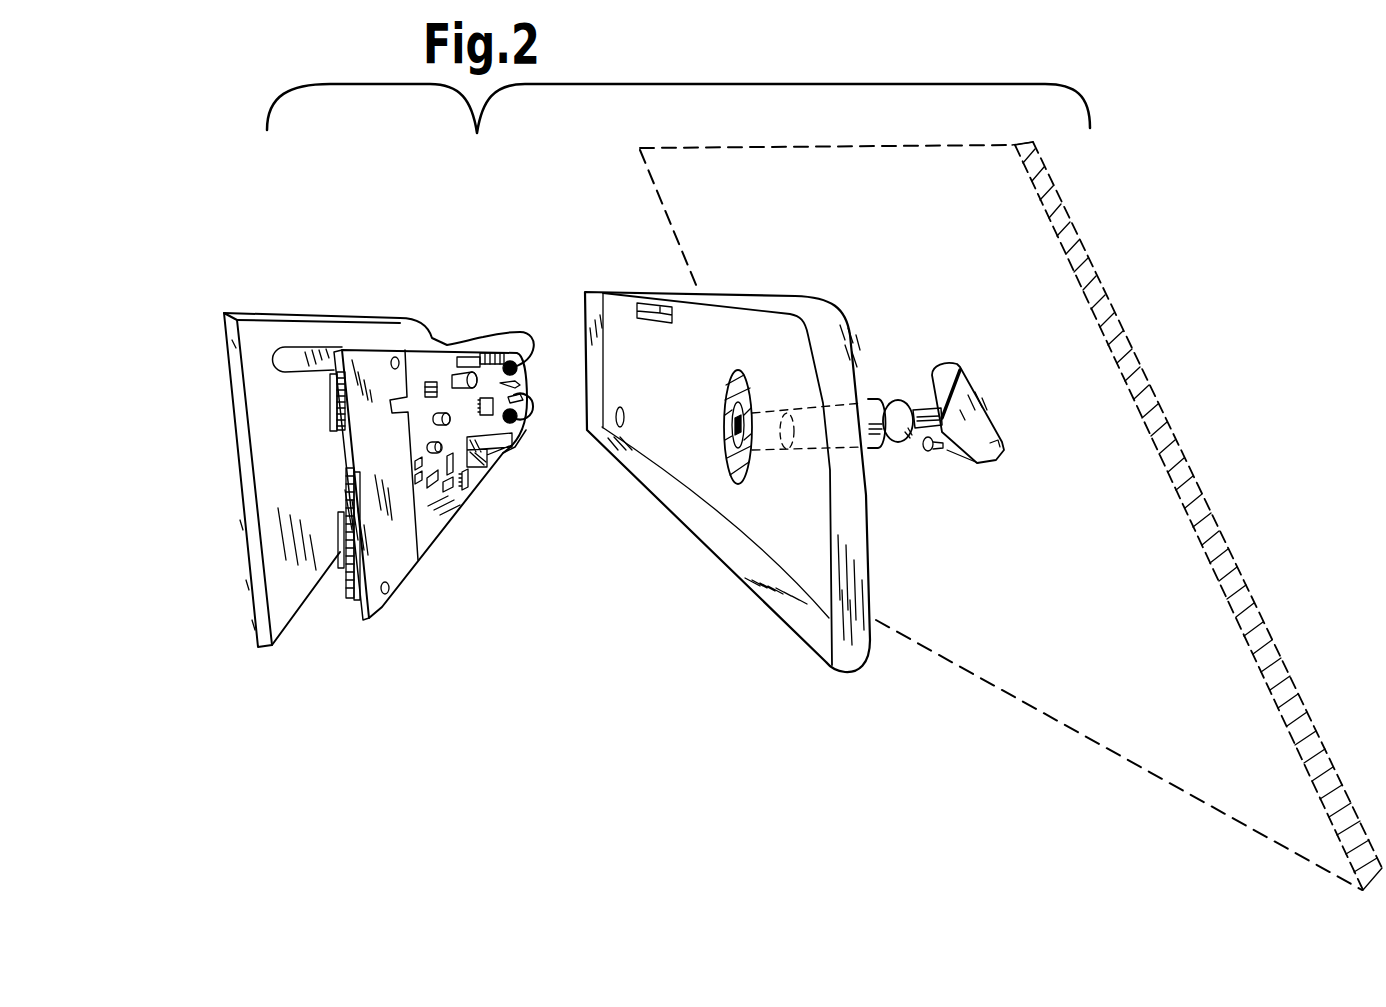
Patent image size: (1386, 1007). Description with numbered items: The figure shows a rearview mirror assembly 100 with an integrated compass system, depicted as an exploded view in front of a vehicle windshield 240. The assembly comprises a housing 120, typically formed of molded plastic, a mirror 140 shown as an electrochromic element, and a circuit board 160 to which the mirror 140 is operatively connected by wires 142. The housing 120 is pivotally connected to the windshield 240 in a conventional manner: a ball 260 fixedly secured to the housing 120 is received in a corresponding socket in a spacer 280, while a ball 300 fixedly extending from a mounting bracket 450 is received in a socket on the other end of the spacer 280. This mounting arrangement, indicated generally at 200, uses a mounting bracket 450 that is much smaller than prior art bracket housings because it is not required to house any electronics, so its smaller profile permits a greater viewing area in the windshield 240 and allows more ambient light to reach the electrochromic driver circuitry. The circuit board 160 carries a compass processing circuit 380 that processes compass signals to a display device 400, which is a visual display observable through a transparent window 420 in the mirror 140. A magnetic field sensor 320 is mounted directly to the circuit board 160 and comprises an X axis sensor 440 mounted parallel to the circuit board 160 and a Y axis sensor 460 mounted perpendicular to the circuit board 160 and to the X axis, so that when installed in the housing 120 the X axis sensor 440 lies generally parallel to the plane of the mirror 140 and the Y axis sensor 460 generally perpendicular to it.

The rearview mirror assembly 100 is at (758, 509).
The housing 120 is at (872, 665).
The mirror 140 is at (265, 648).
The wires 142 is at (540, 393).
The circuit board 160 is at (390, 477).
The mounting assembly 200 is at (973, 400).
The vehicle windshield 240 is at (1082, 608).
The ball 260 is at (787, 452).
The spacer 280 is at (871, 410).
The ball 300 is at (899, 412).
The magnetic field sensor 320 is at (517, 458).
The compass processing circuit 380 is at (448, 488).
The display device 400 is at (334, 401).
The transparent window 420 is at (286, 360).
The X axis sensor 440 is at (478, 458).
The mounting bracket 450 is at (958, 413).
The Y axis sensor 460 is at (492, 441).